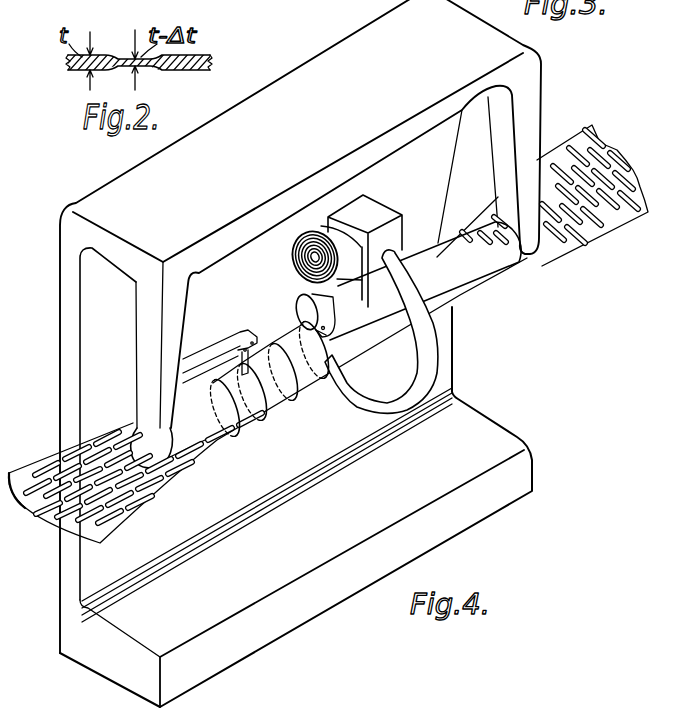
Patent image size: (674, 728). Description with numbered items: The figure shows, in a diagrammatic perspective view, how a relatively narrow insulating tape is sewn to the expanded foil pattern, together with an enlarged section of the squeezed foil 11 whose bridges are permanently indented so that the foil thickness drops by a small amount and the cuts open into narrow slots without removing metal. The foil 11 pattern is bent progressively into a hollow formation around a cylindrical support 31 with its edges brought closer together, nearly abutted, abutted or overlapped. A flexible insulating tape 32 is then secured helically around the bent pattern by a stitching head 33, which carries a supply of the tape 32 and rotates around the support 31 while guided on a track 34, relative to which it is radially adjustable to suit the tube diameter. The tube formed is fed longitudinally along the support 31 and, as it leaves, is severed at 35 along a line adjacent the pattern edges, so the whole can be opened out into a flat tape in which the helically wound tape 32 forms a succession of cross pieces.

The foil 11 is at (328, 332).
The cylindrical support 31 is at (483, 260).
The flexible insulating tape 32 is at (310, 280).
The stitching head 33 is at (312, 307).
The track 34 is at (438, 348).
The severing location 35 is at (256, 350).